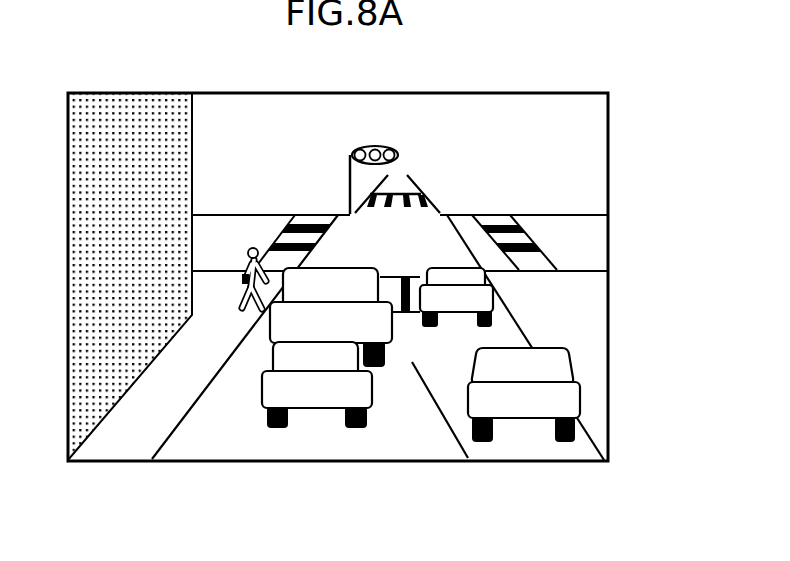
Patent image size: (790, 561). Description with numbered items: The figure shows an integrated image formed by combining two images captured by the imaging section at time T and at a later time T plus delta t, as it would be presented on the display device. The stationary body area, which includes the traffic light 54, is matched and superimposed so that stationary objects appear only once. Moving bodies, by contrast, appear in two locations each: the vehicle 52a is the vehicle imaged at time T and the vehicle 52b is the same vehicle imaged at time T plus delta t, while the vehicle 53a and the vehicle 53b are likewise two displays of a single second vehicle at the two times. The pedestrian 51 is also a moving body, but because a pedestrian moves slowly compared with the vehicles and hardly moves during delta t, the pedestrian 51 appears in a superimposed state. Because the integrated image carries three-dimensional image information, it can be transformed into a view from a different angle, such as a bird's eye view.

The pedestrian 51 is at (253, 248).
The vehicle 52a is at (325, 410).
The vehicle 52b is at (268, 333).
The vehicle 53a is at (493, 289).
The vehicle 53b is at (523, 420).
The traffic light 54 is at (380, 146).